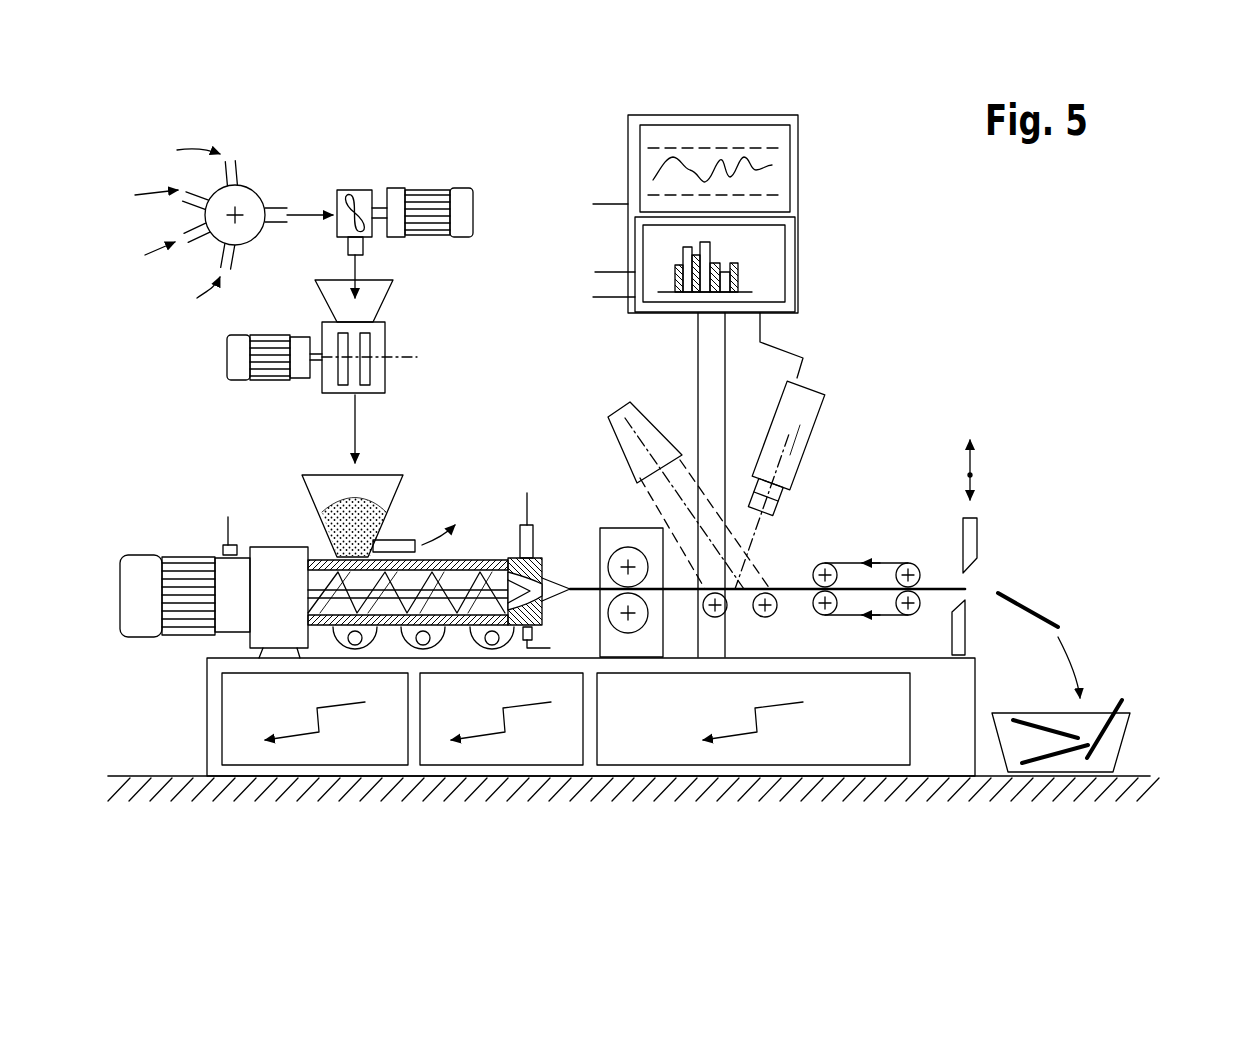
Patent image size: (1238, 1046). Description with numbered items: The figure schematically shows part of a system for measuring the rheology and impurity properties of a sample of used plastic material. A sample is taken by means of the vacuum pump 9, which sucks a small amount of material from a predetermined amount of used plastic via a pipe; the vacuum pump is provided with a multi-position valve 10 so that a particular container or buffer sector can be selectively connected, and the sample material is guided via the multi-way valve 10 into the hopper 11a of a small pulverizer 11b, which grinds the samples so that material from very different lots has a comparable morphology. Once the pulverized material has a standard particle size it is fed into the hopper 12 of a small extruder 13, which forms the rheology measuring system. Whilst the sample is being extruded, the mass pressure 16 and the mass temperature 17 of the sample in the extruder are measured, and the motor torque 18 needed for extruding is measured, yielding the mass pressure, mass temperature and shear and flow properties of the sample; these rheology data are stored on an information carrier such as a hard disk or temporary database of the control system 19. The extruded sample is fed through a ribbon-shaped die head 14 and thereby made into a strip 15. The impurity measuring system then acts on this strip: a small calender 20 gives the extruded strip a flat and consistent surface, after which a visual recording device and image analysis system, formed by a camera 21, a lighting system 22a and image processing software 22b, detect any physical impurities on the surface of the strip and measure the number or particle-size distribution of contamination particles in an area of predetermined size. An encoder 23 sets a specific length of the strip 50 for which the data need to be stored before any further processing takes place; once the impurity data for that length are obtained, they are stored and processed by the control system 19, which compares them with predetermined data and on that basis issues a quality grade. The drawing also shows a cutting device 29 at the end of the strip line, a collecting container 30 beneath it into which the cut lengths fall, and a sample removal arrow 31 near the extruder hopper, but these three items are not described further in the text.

The vacuum pump 9 is at (348, 190).
The multi-position valve 10 is at (257, 182).
The hopper 11a is at (385, 292).
The pulverizer 11b is at (387, 338).
The hopper 12 is at (405, 487).
The extruder 13 is at (275, 555).
The ribbon-shaped die head 14 is at (517, 556).
The strip 15 is at (795, 588).
The mass pressure 16 is at (532, 540).
The mass temperature 17 is at (522, 633).
The motor torque 18 is at (223, 545).
The control system 19 is at (798, 160).
The calender 20 is at (613, 537).
The camera 21 is at (812, 407).
The lighting system 22a is at (647, 423).
The image processing software 22b is at (795, 253).
The encoder 23 is at (776, 616).
The cutting device 29 is at (975, 540).
The collecting container 30 is at (1125, 737).
The sample removal 31 is at (413, 518).
The strip 50 is at (1027, 605).